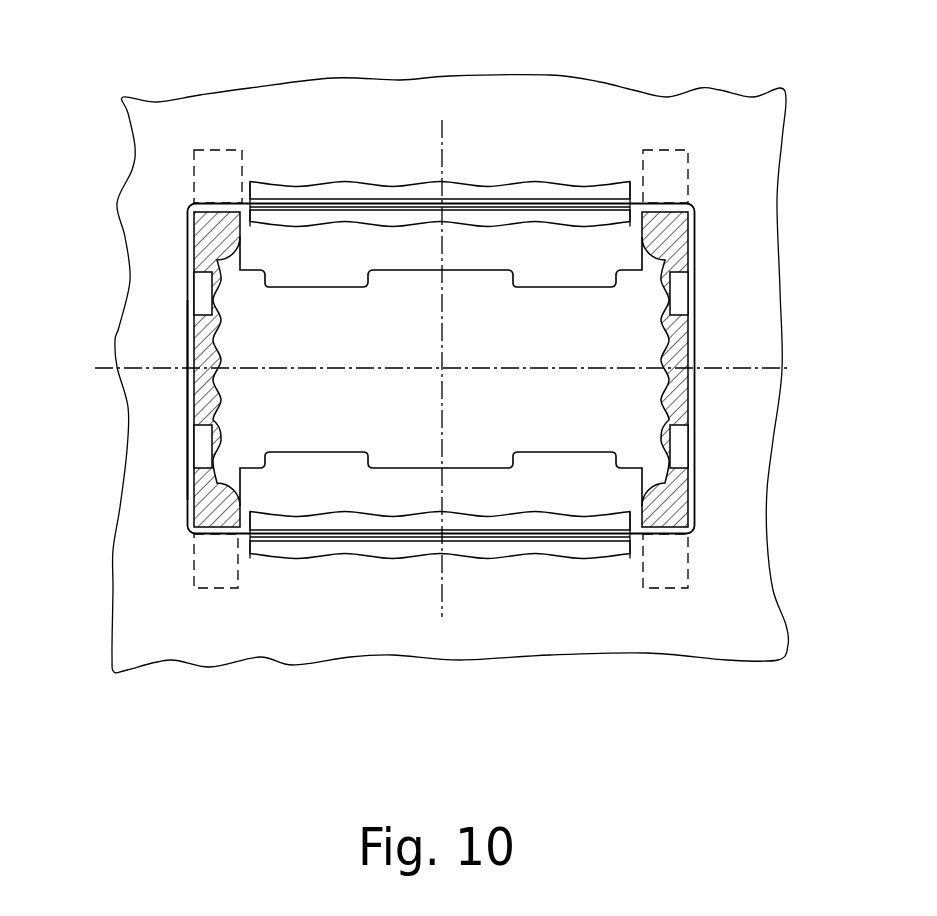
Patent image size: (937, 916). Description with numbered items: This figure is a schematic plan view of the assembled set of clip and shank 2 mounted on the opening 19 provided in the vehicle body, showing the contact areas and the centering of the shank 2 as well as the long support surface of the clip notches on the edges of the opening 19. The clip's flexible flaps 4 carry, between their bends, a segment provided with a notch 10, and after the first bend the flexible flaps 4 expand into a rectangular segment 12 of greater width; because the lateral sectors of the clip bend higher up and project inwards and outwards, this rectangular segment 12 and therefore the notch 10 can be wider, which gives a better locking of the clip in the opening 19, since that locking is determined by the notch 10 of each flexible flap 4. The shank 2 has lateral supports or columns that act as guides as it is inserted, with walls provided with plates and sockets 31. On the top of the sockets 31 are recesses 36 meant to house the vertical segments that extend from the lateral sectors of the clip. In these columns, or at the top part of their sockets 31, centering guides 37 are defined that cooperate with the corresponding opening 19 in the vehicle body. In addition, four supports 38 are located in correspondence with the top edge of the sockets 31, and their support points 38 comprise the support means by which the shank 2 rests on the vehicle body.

The shank 2 is at (330, 335).
The flexible flaps 4 is at (383, 213).
The notch 10 is at (450, 205).
The rectangular segment 12 is at (535, 190).
The opening 19 is at (188, 422).
The sockets 31 is at (695, 278).
The recesses 36 is at (670, 297).
The centering guides 37 is at (690, 218).
The supports 38 is at (215, 165).